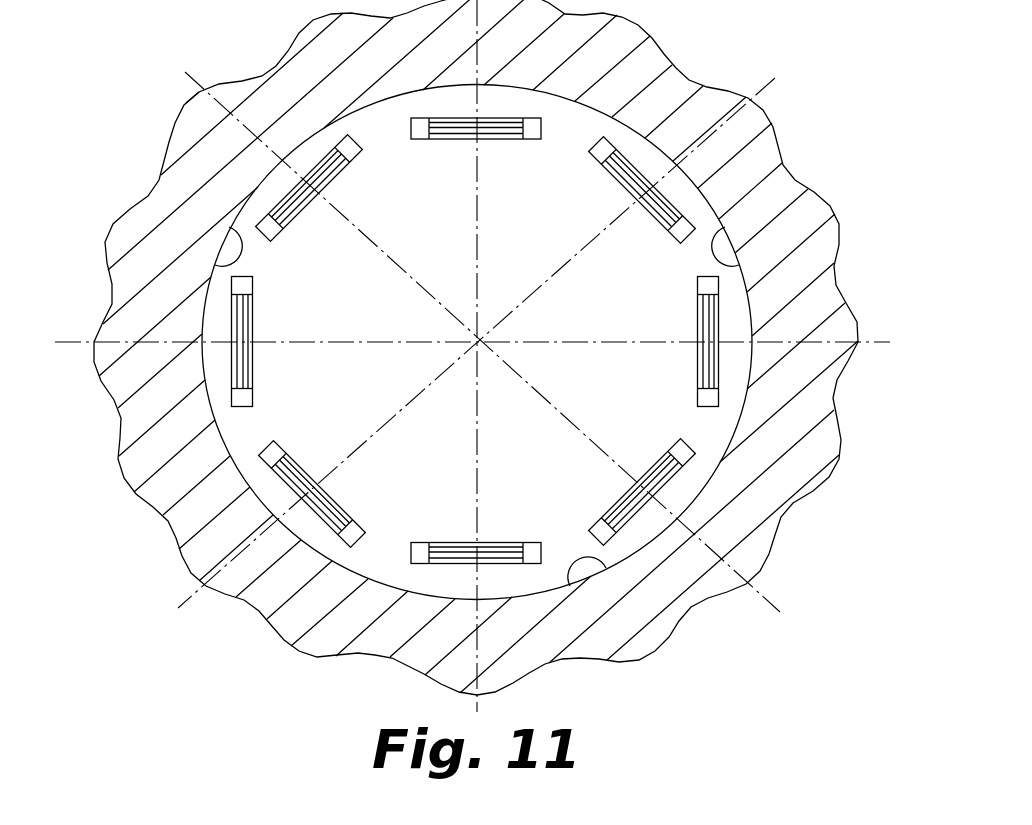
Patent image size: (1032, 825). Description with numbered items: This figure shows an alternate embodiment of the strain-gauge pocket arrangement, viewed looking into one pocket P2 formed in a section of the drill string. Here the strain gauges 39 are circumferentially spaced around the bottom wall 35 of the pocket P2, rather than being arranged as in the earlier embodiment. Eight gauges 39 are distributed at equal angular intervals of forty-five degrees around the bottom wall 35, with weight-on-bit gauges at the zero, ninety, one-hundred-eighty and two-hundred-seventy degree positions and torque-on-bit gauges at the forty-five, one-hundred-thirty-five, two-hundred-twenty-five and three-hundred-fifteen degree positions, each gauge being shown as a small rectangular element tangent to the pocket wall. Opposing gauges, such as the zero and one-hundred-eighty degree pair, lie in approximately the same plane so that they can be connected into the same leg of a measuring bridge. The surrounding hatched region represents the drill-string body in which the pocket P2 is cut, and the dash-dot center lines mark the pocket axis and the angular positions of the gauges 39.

The strain gauges 39 is at (553, 179).
The pocket P2 is at (507, 347).
The bottom wall 35 is at (713, 432).